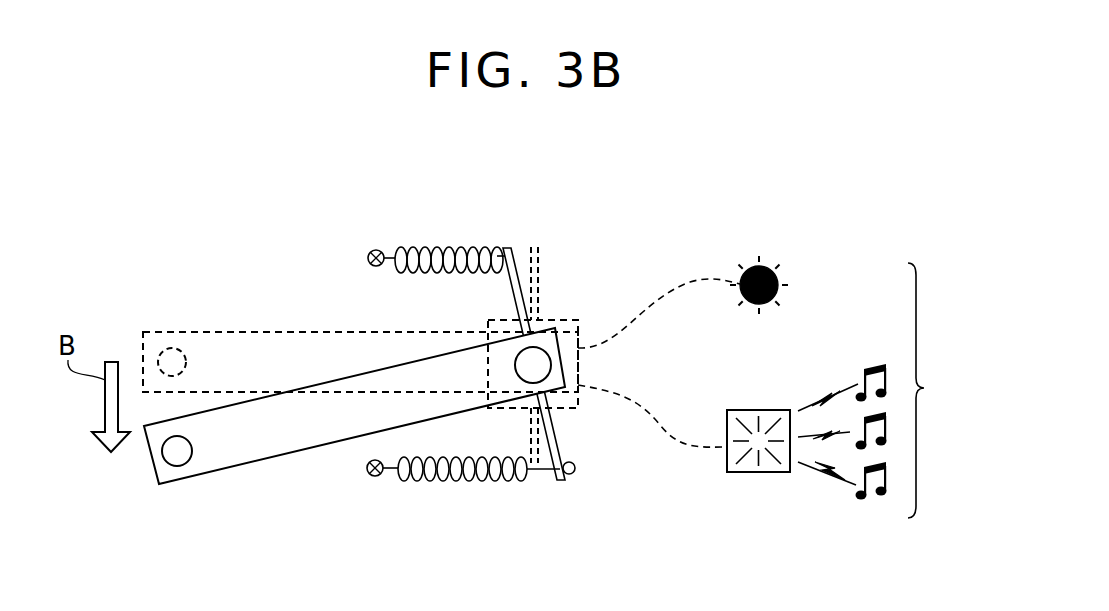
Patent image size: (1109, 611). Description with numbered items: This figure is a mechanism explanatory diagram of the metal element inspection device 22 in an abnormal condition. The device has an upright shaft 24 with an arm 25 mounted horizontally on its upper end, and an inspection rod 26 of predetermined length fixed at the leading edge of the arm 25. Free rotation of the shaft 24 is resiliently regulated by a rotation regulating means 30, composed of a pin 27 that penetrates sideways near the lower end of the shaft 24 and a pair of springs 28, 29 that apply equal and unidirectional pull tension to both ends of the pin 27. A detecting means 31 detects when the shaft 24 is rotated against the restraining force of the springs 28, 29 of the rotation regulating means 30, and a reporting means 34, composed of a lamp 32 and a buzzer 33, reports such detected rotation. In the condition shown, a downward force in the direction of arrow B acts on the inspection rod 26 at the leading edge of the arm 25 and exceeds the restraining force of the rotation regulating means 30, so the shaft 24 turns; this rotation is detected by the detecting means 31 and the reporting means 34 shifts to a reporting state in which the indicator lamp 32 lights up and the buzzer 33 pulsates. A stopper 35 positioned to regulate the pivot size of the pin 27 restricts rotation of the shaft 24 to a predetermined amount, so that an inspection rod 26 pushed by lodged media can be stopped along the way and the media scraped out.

The metal element inspection device 22 is at (752, 176).
The shaft 24 is at (516, 364).
The arm 25 is at (283, 458).
The inspection rod 26 is at (168, 484).
The pin 27 is at (520, 293).
The spring 28 is at (422, 247).
The spring 29 is at (420, 483).
The rotation regulating means 30 is at (572, 206).
The detecting means 31 is at (563, 407).
The lamp 32 is at (782, 282).
The buzzer 33 is at (773, 472).
The reporting means 34 is at (945, 390).
The stopper 35 is at (569, 474).